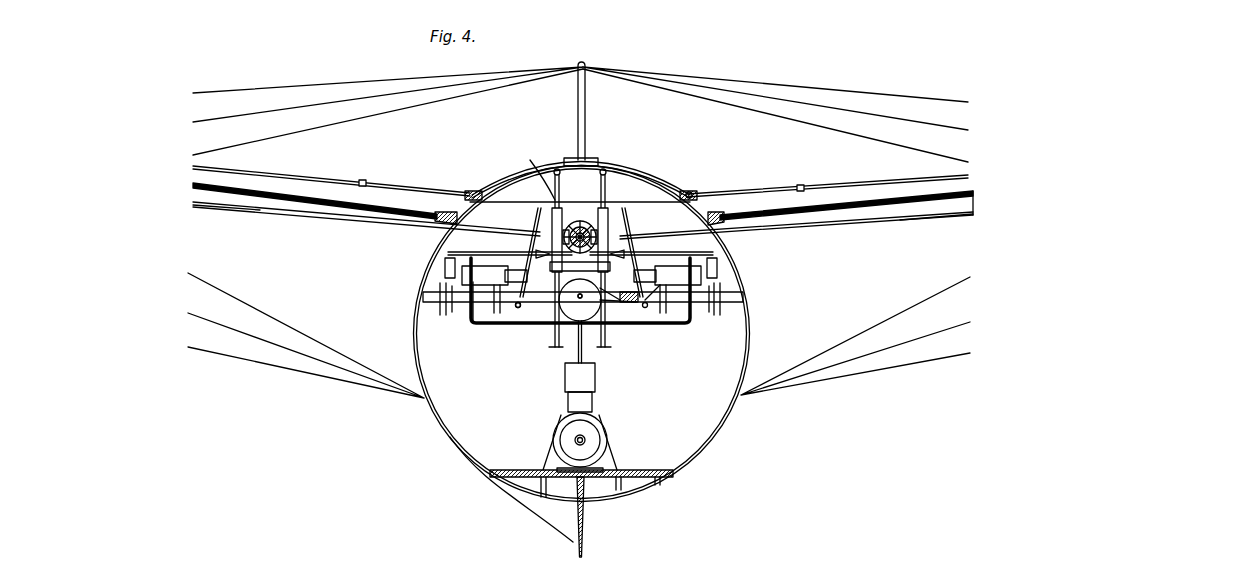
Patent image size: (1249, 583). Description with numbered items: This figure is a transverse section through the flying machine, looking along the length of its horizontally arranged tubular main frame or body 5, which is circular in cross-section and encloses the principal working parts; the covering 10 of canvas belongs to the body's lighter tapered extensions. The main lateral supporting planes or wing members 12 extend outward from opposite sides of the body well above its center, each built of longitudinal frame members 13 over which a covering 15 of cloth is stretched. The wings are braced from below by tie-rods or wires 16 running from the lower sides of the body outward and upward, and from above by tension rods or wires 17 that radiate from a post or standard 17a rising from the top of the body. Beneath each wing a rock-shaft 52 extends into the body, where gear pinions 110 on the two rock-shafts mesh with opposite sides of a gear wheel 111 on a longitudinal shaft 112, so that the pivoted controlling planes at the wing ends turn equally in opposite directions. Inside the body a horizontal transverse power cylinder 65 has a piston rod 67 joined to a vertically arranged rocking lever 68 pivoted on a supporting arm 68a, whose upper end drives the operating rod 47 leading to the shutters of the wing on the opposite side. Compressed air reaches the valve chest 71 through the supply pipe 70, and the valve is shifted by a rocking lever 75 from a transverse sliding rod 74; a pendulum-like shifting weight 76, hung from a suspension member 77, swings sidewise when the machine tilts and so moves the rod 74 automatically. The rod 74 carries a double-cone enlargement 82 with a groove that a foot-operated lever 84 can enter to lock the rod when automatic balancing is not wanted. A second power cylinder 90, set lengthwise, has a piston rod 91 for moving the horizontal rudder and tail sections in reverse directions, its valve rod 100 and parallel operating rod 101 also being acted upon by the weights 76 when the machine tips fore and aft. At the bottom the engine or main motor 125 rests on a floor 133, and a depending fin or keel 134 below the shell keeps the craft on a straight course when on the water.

The main frame or body 5 is at (413, 312).
The covering 10 is at (474, 322).
The main lateral supporting planes or wing members 12 is at (321, 196).
The longitudinal frame members 13 is at (410, 219).
The covering 15 is at (288, 194).
The tie-rods or wires 16 is at (198, 348).
The tension rods or wires 17 is at (226, 149).
The post or standard 17a is at (587, 83).
The operating rod 47 is at (287, 178).
The rock-shaft 52 is at (249, 208).
The power cylinder 65 is at (466, 309).
The piston rod 67 is at (648, 301).
The rocking lever 68 is at (518, 308).
The supporting arm 68a is at (516, 280).
The supply pipe 70 is at (581, 302).
The valve chest 71 is at (445, 283).
The rod 74 is at (476, 191).
The rocking lever 75 is at (447, 256).
The shifting weight 76 is at (556, 210).
The suspension member 77 is at (556, 170).
The enlargement 82 is at (537, 252).
The lever 84 is at (560, 300).
The power cylinder 90 is at (590, 321).
The piston rod 91 is at (579, 298).
The valve rod 100 is at (562, 302).
The operating rod 101 is at (689, 192).
The gear pinions 110 is at (544, 225).
The gear wheel 111 is at (594, 228).
The shaft 112 is at (557, 200).
The engine or main motor 125 is at (604, 412).
The floor 133 is at (647, 463).
The depending fin or keel 134 is at (579, 540).